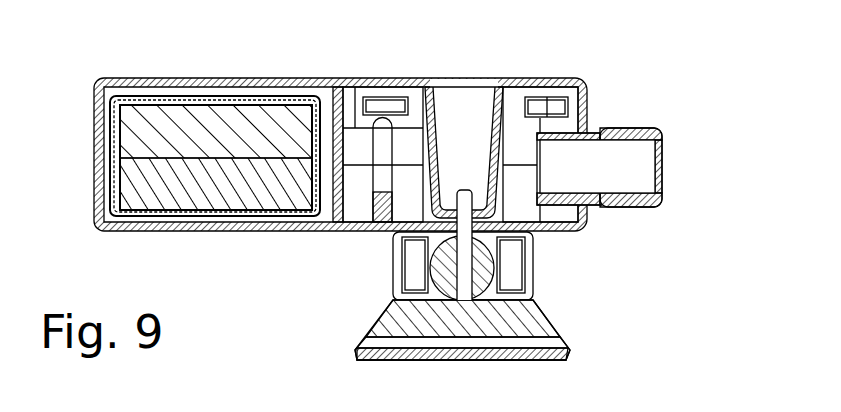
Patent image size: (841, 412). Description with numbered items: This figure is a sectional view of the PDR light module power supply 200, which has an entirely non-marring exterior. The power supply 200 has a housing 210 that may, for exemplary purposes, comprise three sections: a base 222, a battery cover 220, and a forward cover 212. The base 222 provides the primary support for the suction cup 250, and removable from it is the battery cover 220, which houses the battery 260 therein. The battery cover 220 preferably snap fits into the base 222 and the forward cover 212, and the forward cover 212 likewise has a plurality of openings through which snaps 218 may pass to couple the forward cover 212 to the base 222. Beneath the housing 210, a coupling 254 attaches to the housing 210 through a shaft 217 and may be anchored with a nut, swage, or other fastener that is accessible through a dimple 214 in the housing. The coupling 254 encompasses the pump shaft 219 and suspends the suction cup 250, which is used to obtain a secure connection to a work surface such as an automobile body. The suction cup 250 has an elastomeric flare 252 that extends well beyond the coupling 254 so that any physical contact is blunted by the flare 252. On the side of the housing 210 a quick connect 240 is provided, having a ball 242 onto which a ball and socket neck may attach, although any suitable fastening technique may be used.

The PDR light module power supply 200 is at (641, 351).
The power supply housing 210 is at (590, 85).
The forward cover 212 is at (367, 80).
The dimple 214 is at (490, 134).
The shaft 217 is at (463, 292).
The snaps 218 is at (494, 80).
The pump shaft 219 is at (487, 268).
The battery cover 220 is at (133, 79).
The base 222 is at (137, 232).
The quick connect 240 is at (632, 167).
The ball 242 is at (647, 204).
The suction cup 250 is at (499, 317).
The elastomeric flare 252 is at (563, 337).
The coupling 254 is at (393, 288).
The battery 260 is at (222, 141).